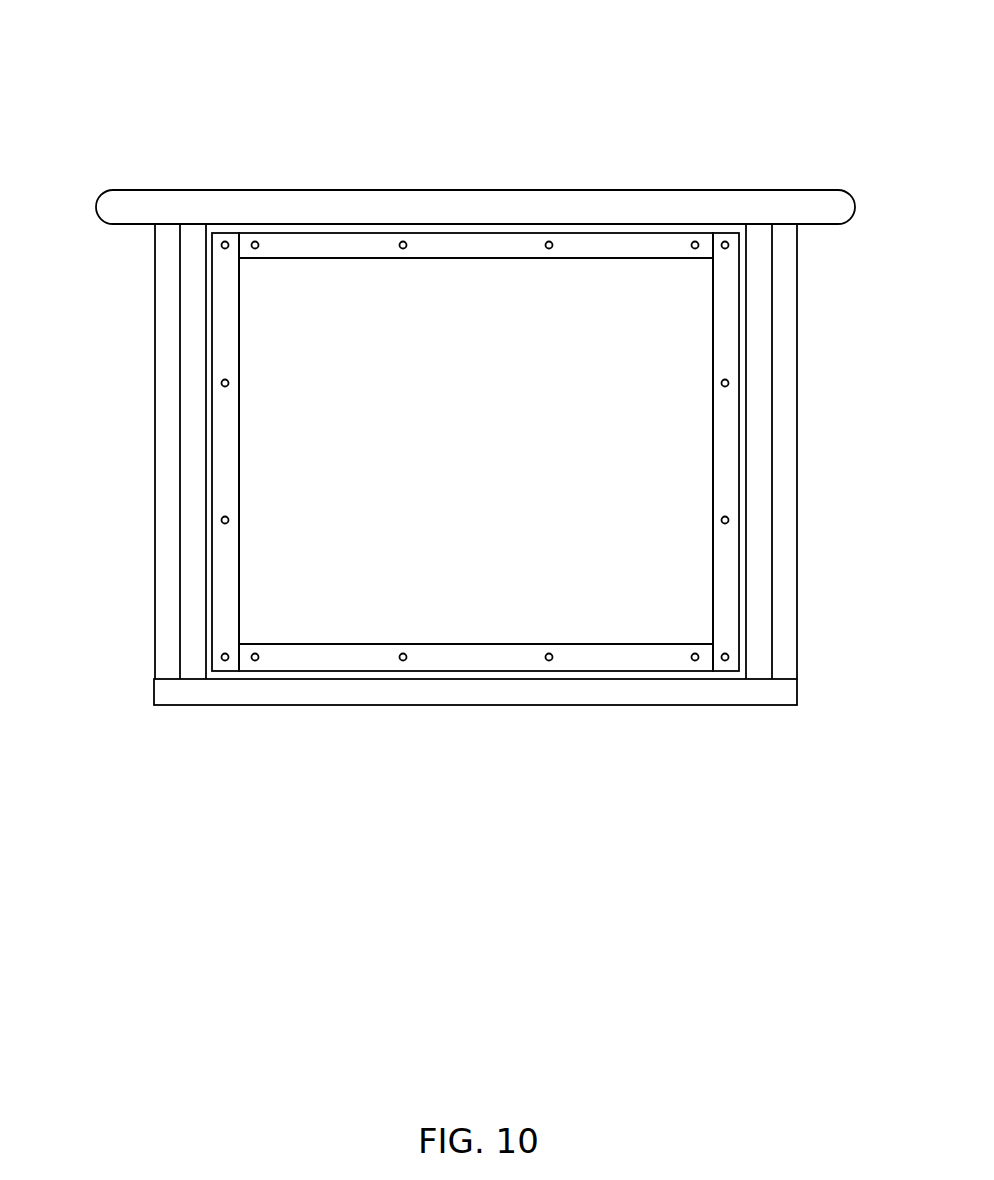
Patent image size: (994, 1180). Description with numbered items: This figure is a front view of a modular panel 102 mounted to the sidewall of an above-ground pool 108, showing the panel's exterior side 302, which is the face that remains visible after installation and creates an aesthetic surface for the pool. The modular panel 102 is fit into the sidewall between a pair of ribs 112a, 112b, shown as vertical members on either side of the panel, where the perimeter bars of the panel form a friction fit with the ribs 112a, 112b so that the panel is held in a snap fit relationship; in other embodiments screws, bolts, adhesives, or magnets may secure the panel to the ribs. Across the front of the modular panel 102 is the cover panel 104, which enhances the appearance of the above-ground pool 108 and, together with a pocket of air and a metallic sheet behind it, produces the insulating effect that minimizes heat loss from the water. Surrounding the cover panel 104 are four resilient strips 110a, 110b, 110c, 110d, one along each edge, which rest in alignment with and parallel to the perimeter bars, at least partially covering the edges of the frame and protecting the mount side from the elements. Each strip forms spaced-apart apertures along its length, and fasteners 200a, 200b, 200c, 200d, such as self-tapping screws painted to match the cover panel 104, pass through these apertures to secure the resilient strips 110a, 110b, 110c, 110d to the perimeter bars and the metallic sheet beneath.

The modular panel 102 is at (345, 128).
The cover panel 104 is at (543, 452).
The above-ground pool 108 is at (695, 213).
The rib 112a is at (155, 495).
The rib 112b is at (790, 495).
The resilient strip 110a is at (238, 467).
The resilient strip 110b is at (716, 468).
The resilient strip 110c is at (504, 248).
The resilient strip 110d is at (490, 655).
The fastener 200a is at (228, 383).
The fastener 200b is at (722, 383).
The fastener 200c is at (403, 250).
The fastener 200d is at (549, 652).
The exterior side 302 is at (495, 440).